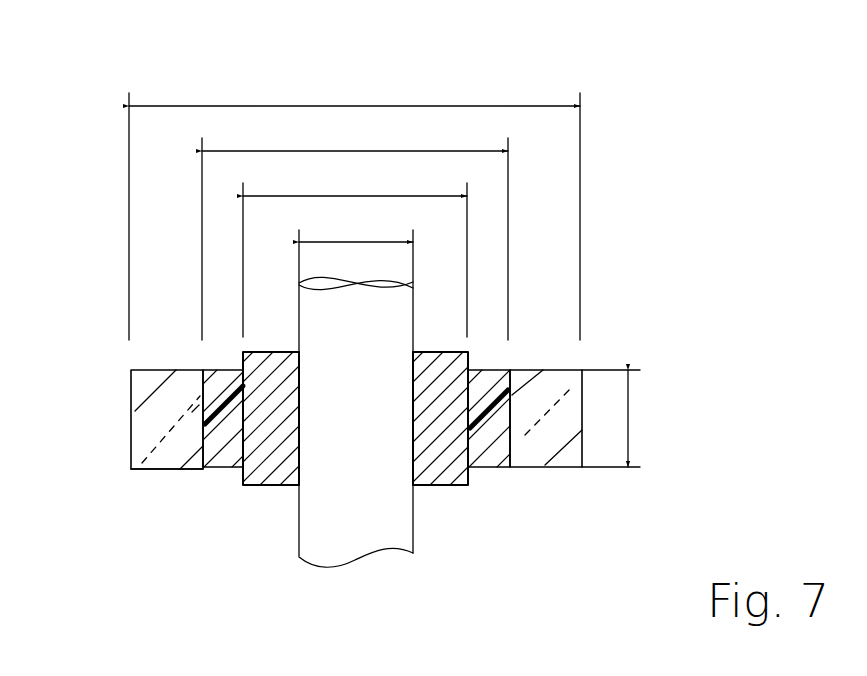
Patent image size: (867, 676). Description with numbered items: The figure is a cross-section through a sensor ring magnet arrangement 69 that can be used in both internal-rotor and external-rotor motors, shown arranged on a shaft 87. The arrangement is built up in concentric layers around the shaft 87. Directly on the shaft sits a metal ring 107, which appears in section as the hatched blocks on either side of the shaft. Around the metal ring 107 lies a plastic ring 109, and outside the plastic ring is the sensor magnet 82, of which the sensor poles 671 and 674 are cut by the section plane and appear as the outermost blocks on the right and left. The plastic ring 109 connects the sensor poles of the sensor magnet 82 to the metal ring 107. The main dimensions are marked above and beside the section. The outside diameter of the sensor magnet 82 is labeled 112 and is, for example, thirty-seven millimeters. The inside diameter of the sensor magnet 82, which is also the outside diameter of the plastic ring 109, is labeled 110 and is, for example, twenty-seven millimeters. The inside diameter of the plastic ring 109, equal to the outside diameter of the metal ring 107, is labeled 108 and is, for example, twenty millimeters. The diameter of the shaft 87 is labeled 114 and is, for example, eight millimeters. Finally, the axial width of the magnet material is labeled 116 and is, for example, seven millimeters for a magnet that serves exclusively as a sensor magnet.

The outside diameter of sensor magnet 112 is at (177, 106).
The inside diameter of sensor magnet 110 is at (257, 151).
The diameter of shaft 114 is at (335, 242).
The inside diameter of plastic ring 108 is at (414, 196).
The sensor ring magnet arrangement 69 is at (596, 345).
The width of magnet material 116 is at (628, 413).
The sensor magnet 82 is at (148, 418).
The sensor pole 674 is at (160, 469).
The shaft 87 is at (323, 522).
The metal ring 107 is at (450, 466).
The plastic ring 109 is at (493, 468).
The sensor pole 671 is at (577, 469).